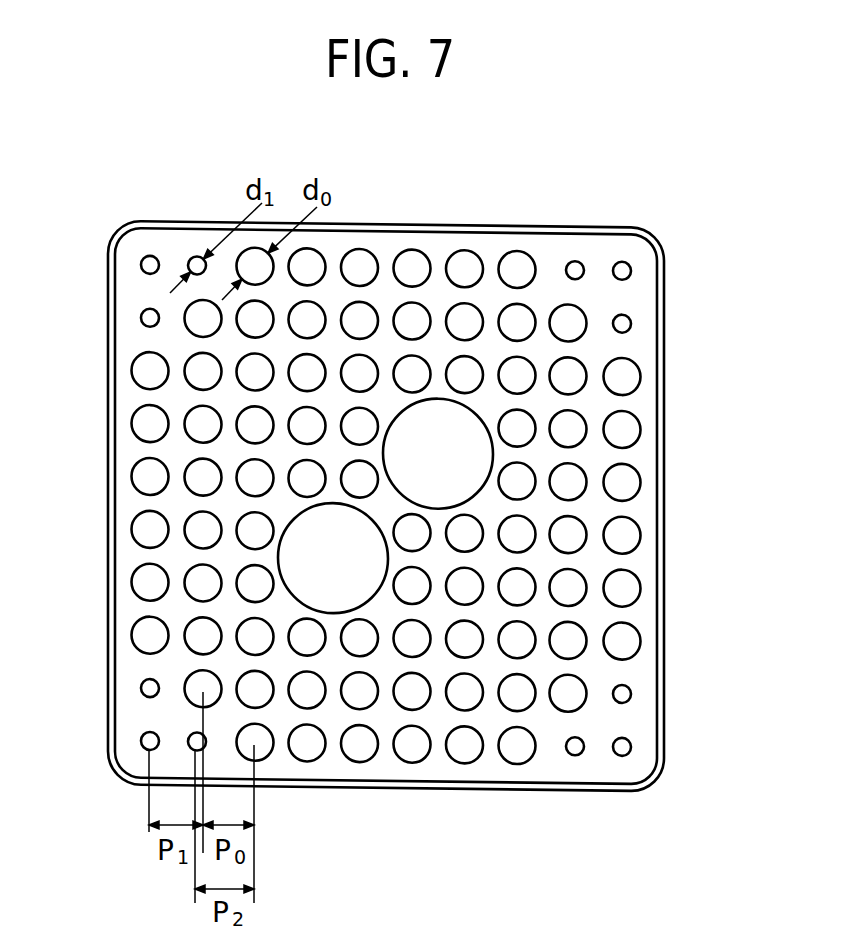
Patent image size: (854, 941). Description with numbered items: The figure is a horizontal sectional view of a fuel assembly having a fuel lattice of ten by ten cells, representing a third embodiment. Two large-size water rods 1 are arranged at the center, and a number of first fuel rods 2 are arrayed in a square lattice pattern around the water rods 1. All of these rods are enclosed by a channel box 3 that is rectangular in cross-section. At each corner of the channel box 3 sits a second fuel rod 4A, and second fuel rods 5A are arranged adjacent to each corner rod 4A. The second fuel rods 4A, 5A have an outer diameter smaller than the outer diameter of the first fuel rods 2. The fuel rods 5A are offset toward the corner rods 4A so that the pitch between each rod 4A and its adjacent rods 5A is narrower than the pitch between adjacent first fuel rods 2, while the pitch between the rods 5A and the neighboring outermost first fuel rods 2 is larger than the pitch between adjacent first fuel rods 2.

The water rod 1 is at (363, 530).
The first fuel rod 2 is at (633, 537).
The channel box 3 is at (662, 674).
The second fuel rod 4A is at (146, 257).
The second fuel rod 5A is at (197, 256).